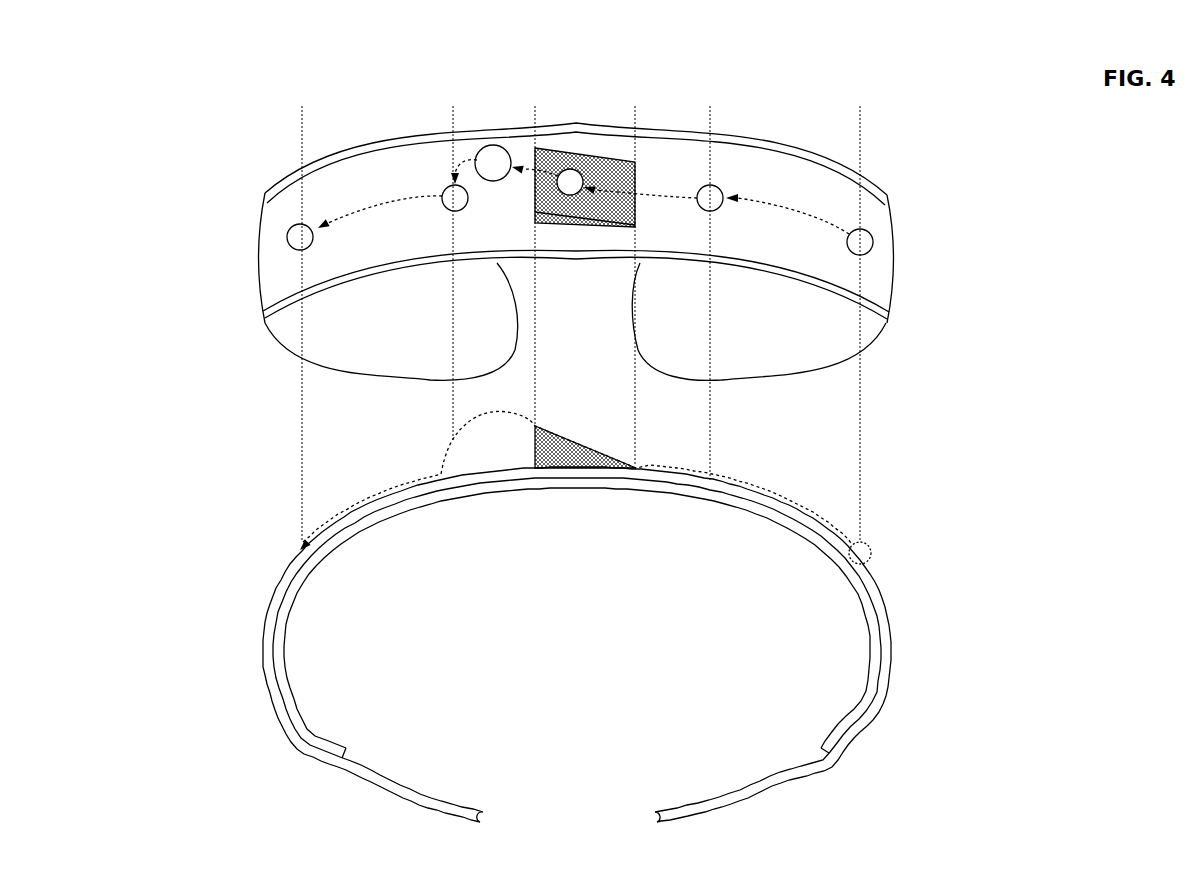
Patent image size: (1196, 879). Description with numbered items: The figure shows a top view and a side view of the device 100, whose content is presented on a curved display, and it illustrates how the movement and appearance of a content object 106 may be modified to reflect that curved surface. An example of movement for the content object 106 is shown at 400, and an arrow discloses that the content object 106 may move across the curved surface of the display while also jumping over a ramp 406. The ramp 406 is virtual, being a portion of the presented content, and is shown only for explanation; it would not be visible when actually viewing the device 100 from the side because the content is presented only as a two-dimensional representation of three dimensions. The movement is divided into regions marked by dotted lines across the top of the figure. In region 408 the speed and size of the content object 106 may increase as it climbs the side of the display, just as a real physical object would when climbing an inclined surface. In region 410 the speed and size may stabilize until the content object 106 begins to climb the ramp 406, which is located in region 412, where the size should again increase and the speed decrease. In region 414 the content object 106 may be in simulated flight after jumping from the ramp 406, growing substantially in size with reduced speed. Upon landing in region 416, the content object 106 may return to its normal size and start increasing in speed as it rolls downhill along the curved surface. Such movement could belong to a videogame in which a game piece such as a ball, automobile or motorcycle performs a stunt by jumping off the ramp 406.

The device 100 is at (518, 469).
The content object 106 is at (873, 243).
The example of movement 400 is at (965, 413).
The ramp 406 is at (535, 205).
The region 408 is at (860, 106).
The region 410 is at (710, 106).
The third region 412 is at (635, 106).
The region 414 is at (535, 106).
The region 416 is at (453, 106).